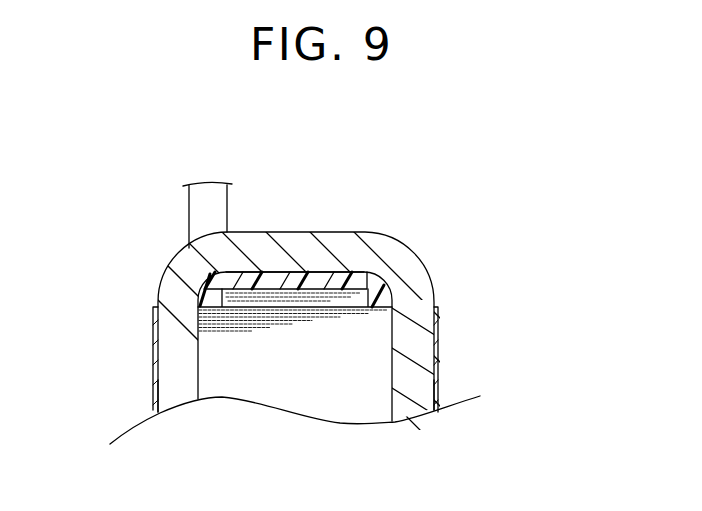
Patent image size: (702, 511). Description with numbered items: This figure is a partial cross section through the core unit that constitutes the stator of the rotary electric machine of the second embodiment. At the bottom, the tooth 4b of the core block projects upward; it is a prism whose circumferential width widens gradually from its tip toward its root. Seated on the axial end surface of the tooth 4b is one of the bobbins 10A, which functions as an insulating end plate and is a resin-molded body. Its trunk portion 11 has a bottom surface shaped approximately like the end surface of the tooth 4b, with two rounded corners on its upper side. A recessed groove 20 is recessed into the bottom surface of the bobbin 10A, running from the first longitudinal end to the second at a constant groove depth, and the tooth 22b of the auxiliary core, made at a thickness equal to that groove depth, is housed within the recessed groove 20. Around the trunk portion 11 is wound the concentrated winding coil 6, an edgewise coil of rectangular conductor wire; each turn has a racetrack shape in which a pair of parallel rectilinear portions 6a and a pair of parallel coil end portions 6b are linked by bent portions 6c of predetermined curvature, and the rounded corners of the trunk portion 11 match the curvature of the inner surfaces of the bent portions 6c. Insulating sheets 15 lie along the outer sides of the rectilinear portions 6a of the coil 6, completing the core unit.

The concentrated winding coil 6 is at (176, 253).
The rectilinear portion 6a is at (173, 392).
The coil end portion 6b is at (247, 248).
The bent portion 6c is at (193, 280).
The bobbin 10A is at (272, 272).
The trunk portion 11 is at (359, 281).
The insulating sheet 15 is at (153, 358).
The recessed groove 20 is at (302, 285).
The tooth 22b is at (358, 278).
The tooth 4b is at (297, 397).